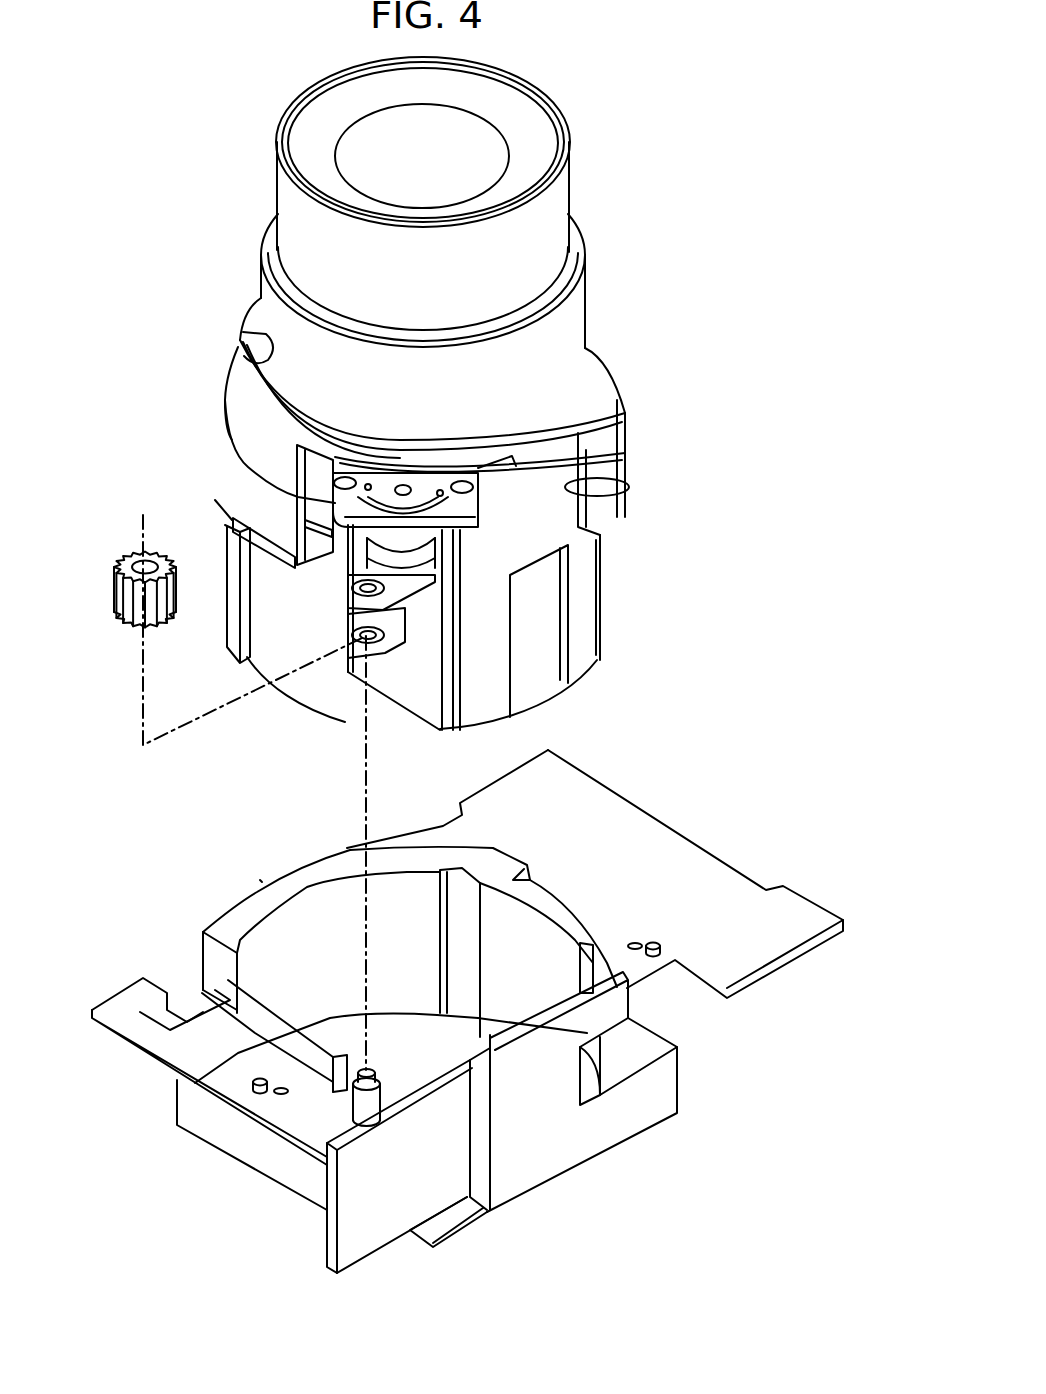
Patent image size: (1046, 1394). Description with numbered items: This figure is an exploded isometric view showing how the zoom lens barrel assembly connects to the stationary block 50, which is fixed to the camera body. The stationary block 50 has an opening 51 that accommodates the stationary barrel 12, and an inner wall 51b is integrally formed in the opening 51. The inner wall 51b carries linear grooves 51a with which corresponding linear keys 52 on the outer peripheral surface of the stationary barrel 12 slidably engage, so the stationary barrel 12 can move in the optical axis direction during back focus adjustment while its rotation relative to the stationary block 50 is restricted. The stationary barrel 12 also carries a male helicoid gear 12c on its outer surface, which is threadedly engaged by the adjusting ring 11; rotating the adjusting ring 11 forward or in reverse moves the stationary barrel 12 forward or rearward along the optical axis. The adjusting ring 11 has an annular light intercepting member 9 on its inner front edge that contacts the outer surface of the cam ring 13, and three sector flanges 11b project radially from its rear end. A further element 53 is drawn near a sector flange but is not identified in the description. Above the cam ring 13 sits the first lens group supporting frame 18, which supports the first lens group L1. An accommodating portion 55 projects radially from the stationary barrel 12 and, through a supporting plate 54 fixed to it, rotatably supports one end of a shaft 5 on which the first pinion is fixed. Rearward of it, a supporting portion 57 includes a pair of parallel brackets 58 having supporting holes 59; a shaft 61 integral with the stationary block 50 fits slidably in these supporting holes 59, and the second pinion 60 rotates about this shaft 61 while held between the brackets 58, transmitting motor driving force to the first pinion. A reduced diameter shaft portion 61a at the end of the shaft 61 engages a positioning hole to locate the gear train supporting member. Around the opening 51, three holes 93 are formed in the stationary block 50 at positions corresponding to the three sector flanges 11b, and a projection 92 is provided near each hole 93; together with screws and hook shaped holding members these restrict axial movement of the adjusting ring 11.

The first lens group L1 is at (470, 127).
The first lens group supporting frame 18 is at (555, 208).
The cam ring 13 is at (567, 323).
The annular light intercepting member 9 is at (243, 335).
The adjusting ring 11 is at (238, 400).
The sector flanges 11b is at (247, 533).
The hole 53 is at (630, 482).
The stationary barrel 12 is at (588, 578).
The linear keys 52 is at (603, 598).
The male helicoid gear 12c is at (317, 530).
The supporting plate 54 is at (430, 480).
The accommodating portion 55 is at (345, 478).
The shaft 5 is at (404, 485).
The supporting portion 57 is at (420, 615).
The brackets 58 is at (393, 657).
The supporting holes 59 is at (362, 650).
The second pinion 60 is at (172, 615).
The stationary block 50 is at (600, 847).
The opening 51 is at (343, 903).
The linear grooves 51a is at (467, 883).
The inner wall 51b is at (297, 923).
The shaft 61 is at (373, 1098).
The reduced diameter shaft portion 61a is at (367, 1073).
The projection 92 is at (255, 1088).
The holes 93 is at (281, 1088).